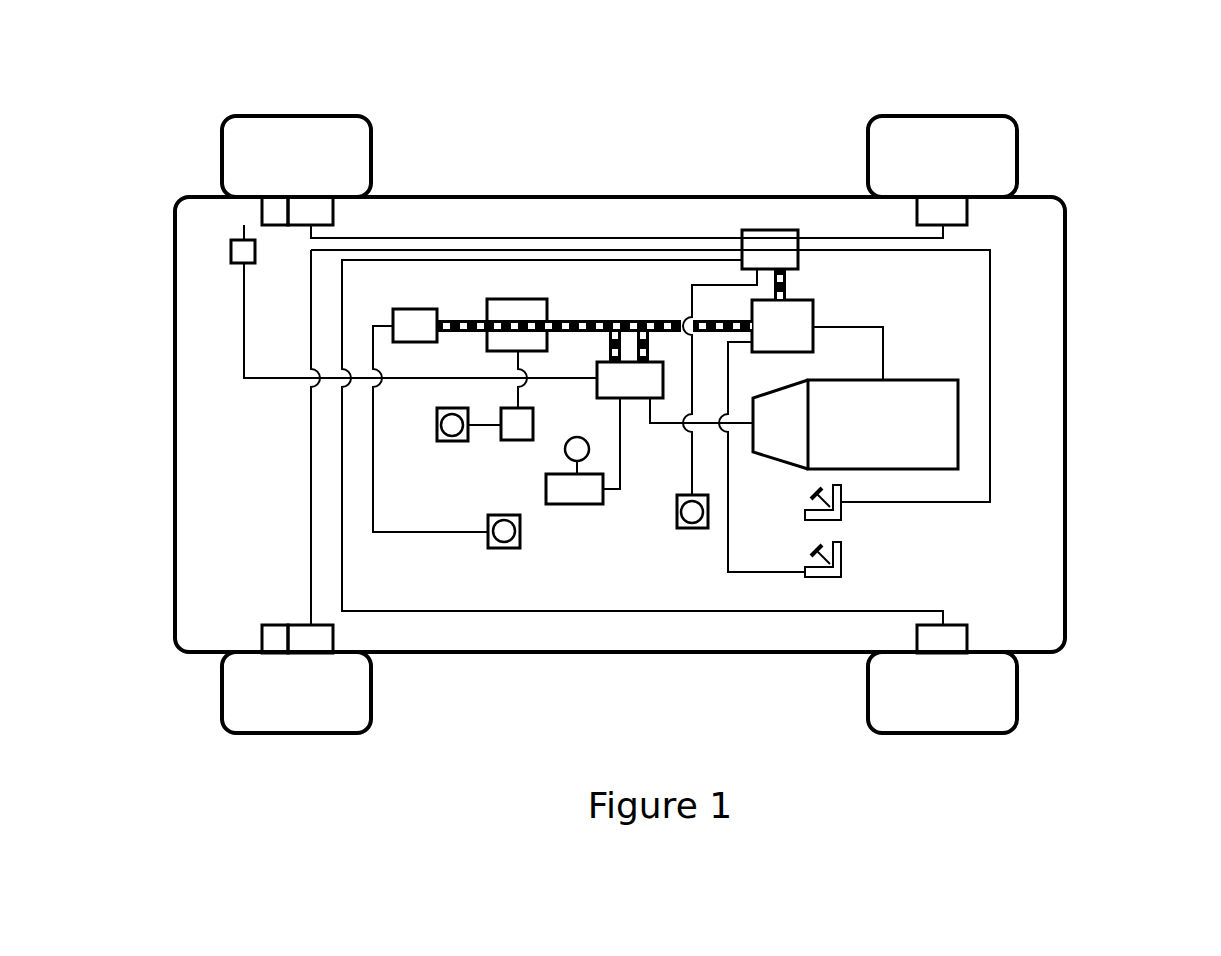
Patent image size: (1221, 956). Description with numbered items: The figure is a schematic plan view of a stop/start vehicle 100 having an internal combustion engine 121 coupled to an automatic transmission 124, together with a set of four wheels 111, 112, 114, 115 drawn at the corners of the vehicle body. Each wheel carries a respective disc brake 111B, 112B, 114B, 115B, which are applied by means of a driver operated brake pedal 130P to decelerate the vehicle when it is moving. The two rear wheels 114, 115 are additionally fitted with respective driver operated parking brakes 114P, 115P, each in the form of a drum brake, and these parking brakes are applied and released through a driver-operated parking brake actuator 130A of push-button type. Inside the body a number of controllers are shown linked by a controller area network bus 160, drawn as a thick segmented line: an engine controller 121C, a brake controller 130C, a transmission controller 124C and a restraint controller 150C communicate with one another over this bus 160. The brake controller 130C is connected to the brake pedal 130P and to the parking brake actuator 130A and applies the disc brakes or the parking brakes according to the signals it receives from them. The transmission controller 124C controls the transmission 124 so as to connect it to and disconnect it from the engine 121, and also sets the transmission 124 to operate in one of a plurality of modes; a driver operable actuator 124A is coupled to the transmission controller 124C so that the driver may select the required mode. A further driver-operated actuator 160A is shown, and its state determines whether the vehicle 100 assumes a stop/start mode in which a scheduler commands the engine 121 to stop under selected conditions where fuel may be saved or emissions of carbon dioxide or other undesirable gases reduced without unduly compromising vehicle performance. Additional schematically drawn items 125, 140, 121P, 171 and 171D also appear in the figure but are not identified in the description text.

The stop/start vehicle 100 is at (1140, 120).
The wheel 111 is at (1003, 162).
The wheel 112 is at (1003, 683).
The rear wheel 114 is at (235, 160).
The rear wheel 115 is at (235, 683).
The disc brake 111B is at (945, 208).
The disc brake 112B is at (945, 642).
The disc brake 114B is at (308, 207).
The disc brake 115B is at (308, 640).
The parking brake 114P is at (272, 207).
The parking brake 115P is at (275, 640).
The steering unit 125 is at (229, 250).
The controller module 140 is at (416, 318).
The restraint controller 150C is at (520, 305).
The controller area network (CAN) bus 160 is at (645, 318).
The brake controller 130C is at (772, 236).
The engine controller 121C is at (810, 311).
The internal combustion engine 121 is at (915, 403).
The automatic transmission 124 is at (788, 445).
The driver operable actuator 124A is at (575, 500).
The transmission controller 124C is at (637, 385).
The brake pedal 130P is at (841, 512).
The accelerator pedal 121P is at (841, 558).
The communication unit 171 is at (518, 440).
The communication device 171D is at (437, 428).
The driver-operated actuator 160A is at (503, 548).
The parking brake actuator 130A is at (692, 528).